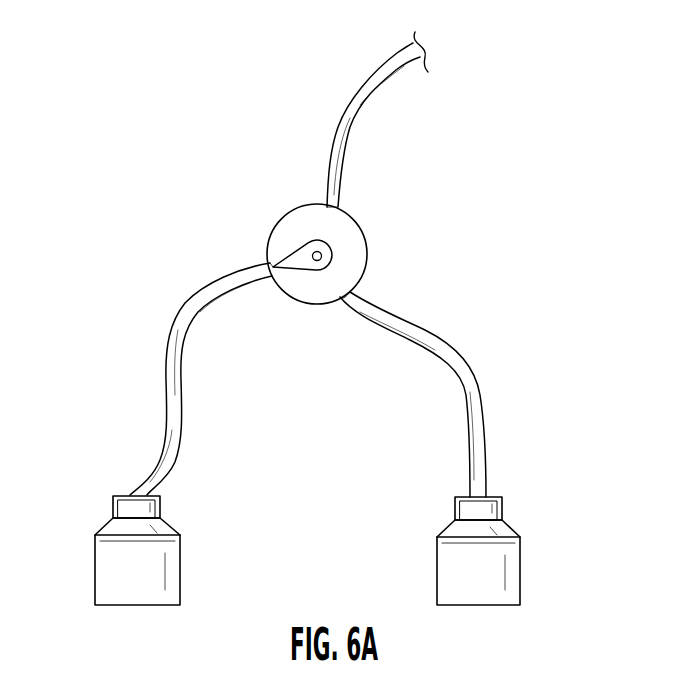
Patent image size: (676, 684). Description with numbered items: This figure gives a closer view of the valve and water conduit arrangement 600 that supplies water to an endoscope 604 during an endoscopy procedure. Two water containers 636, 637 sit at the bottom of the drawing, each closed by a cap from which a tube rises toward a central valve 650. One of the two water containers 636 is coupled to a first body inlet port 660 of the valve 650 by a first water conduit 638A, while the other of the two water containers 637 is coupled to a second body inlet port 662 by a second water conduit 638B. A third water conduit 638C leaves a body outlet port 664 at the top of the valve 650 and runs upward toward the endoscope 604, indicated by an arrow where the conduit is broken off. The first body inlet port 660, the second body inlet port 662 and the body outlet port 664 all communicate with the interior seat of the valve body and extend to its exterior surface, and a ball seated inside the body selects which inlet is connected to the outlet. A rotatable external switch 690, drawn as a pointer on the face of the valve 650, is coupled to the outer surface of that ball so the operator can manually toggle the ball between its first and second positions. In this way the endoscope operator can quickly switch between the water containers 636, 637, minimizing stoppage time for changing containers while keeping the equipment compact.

The fluid delivery system 600 is at (88, 128).
The endoscope 604 is at (424, 44).
The water container 636 is at (180, 560).
The water container 637 is at (520, 548).
The first water conduit 638A is at (167, 357).
The second water conduit 638B is at (473, 403).
The third water conduit 638C is at (362, 92).
The valve 650 is at (376, 218).
The first body inlet port 660 is at (270, 266).
The second body inlet port 662 is at (350, 303).
The body outlet port 664 is at (336, 206).
The rotatable external switch 690 is at (306, 240).